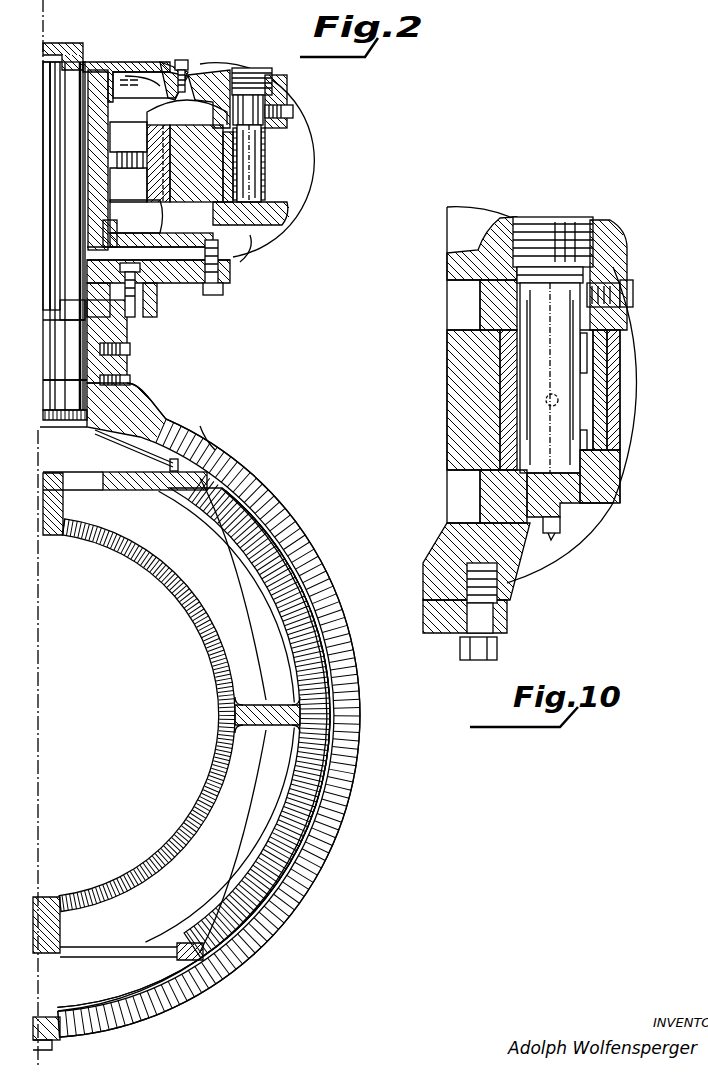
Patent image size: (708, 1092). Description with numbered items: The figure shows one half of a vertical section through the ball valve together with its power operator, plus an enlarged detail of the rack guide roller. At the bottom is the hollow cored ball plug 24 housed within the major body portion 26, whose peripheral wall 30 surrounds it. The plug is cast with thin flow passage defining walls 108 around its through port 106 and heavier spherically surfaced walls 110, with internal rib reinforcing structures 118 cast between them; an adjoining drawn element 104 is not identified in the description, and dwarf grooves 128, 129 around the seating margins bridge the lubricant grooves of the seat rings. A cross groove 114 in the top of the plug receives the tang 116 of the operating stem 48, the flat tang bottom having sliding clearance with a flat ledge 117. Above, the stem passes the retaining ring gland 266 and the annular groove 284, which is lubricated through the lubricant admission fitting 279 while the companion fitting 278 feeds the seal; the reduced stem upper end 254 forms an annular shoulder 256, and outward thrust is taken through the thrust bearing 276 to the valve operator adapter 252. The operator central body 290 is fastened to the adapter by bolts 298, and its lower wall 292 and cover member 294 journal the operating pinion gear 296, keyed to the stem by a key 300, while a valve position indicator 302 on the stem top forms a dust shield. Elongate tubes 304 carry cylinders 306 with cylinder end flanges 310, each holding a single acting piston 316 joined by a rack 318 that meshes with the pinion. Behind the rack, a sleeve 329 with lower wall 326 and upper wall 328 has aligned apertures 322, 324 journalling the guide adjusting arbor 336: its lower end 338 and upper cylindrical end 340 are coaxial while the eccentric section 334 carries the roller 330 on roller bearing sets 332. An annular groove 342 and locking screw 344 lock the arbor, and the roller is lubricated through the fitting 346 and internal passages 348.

In FIG. 2, the valve position indicator 302 is at (56, 50).
In FIG. 2, the cover member 294 is at (108, 62).
In FIG. 2, the central body 290 is at (182, 62).
In FIG. 2, the elongate tube 304 is at (210, 76).
In FIG. 10, the elongate tube 304 is at (470, 250).
In FIG. 2, the upper wall 328 is at (287, 95).
In FIG. 10, the upper wall 328 is at (619, 239).
In FIG. 2, the roller 330 is at (270, 160).
In FIG. 10, the roller 330 is at (594, 363).
In FIG. 2, the eccentric section 334 is at (260, 180).
In FIG. 10, the eccentric section 334 is at (601, 410).
In FIG. 2, the cylinder 306 is at (160, 96).
In FIG. 2, the single acting piston 316 is at (203, 124).
In FIG. 2, the operating pinion gear 296 is at (148, 140).
In FIG. 2, the rack 318 is at (183, 192).
In FIG. 10, the rack 318 is at (448, 415).
In FIG. 2, the lower wall 292 is at (155, 233).
In FIG. 10, the lower wall 292 is at (437, 545).
In FIG. 2, the lower wall 326 is at (272, 206).
In FIG. 10, the lower wall 326 is at (600, 505).
In FIG. 2, the fitting 346 is at (250, 236).
In FIG. 10, the fitting 346 is at (548, 505).
In FIG. 2, the key 300 is at (46, 225).
In FIG. 2, the stem upper end 254 is at (50, 275).
In FIG. 2, the annular shoulder 256 is at (100, 290).
In FIG. 2, the valve operator adapter 252 is at (153, 274).
In FIG. 10, the valve operator adapter 252 is at (508, 620).
In FIG. 2, the bolt 298 is at (209, 296).
In FIG. 10, the bolt 298 is at (498, 650).
In FIG. 2, the thrust bearing 276 is at (60, 313).
In FIG. 2, the retaining ring gland 266 is at (100, 313).
In FIG. 2, the operating stem 48 is at (48, 347).
In FIG. 2, the lubricant admission fitting 278 is at (130, 350).
In FIG. 2, the annular groove 284 is at (45, 380).
In FIG. 2, the lubricant admission fitting 279 is at (130, 380).
In FIG. 2, the tang 116 is at (143, 413).
In FIG. 2, the major body portion 26 is at (206, 428).
In FIG. 2, the cross groove 114 is at (123, 473).
In FIG. 2, the flat ledge 117 is at (210, 458).
In FIG. 2, the dwarf groove 129 is at (248, 517).
In FIG. 2, the dwarf groove 128 is at (273, 530).
In FIG. 2, the rim 104 is at (305, 540).
In FIG. 2, the through port 106 is at (133, 563).
In FIG. 2, the flow passage defining wall 108 is at (172, 592).
In FIG. 2, the ball plug 24 is at (218, 718).
In FIG. 2, the internal rib reinforcing structure 118 is at (243, 727).
In FIG. 2, the peripheral wall 30 is at (358, 735).
In FIG. 2, the spherically surfaced wall 110 is at (275, 877).
In FIG. 10, the locking screw 344 is at (530, 217).
In FIG. 10, the annular groove 342 is at (572, 217).
In FIG. 10, the upper cylindrical end 340 is at (515, 273).
In FIG. 10, the aperture 324 is at (517, 300).
In FIG. 10, the roller bearing set 332 is at (513, 347).
In FIG. 10, the guide adjusting arbor 336 is at (527, 372).
In FIG. 10, the sleeve 329 is at (623, 363).
In FIG. 10, the internal passage 348 is at (552, 394).
In FIG. 10, the lower end 338 is at (527, 492).
In FIG. 10, the cylinder end flange 310 is at (625, 452).
In FIG. 10, the aperture 322 is at (560, 526).